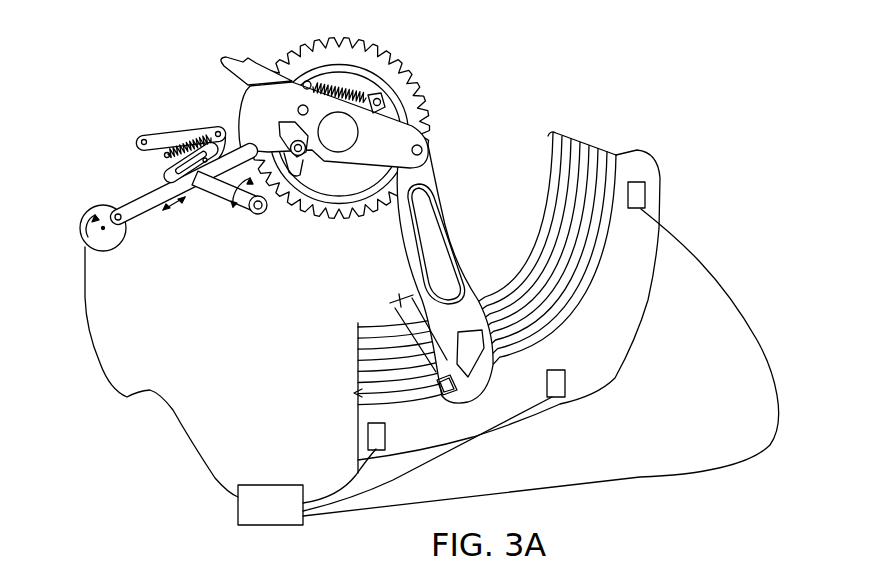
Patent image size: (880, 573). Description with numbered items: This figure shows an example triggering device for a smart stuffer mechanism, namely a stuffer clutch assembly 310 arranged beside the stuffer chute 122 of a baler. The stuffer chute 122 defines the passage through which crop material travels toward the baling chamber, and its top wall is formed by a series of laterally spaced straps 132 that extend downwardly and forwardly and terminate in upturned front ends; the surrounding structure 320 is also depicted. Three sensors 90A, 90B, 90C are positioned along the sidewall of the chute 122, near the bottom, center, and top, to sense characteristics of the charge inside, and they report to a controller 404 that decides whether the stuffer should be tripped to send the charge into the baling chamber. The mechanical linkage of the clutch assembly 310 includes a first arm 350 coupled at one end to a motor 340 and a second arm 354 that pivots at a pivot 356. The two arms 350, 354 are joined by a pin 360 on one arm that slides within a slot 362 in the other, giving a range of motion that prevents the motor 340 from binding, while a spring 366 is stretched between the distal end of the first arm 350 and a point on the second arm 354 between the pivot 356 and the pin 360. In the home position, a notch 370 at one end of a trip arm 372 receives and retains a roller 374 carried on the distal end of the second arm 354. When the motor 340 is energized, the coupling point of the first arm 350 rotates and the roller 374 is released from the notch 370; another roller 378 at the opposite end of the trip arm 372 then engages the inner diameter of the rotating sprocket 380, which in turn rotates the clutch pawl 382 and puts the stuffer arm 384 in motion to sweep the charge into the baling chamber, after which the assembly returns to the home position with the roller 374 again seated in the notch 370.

The stuffer clutch assembly 310 is at (497, 41).
The housing 320 is at (631, 394).
The motor 340 is at (82, 220).
The first arm 350 is at (140, 203).
The second arm 354 is at (224, 190).
The pivot 356 is at (141, 139).
The pin 360 is at (211, 186).
The slot 362 is at (172, 177).
The spring 366 is at (187, 140).
The notch 370 is at (252, 84).
The trip arm 372 is at (249, 72).
The roller 374 is at (260, 214).
The roller 378 is at (300, 158).
The sprocket 380 is at (397, 78).
The clutch pawl 382 is at (390, 138).
The stuffer arm 384 is at (427, 175).
The stuffer chute 122 is at (633, 297).
The straps 132 is at (592, 162).
The sensor 90A is at (387, 443).
The sensor 90B is at (563, 381).
The sensor 90C is at (646, 197).
The controller 404 is at (395, 461).